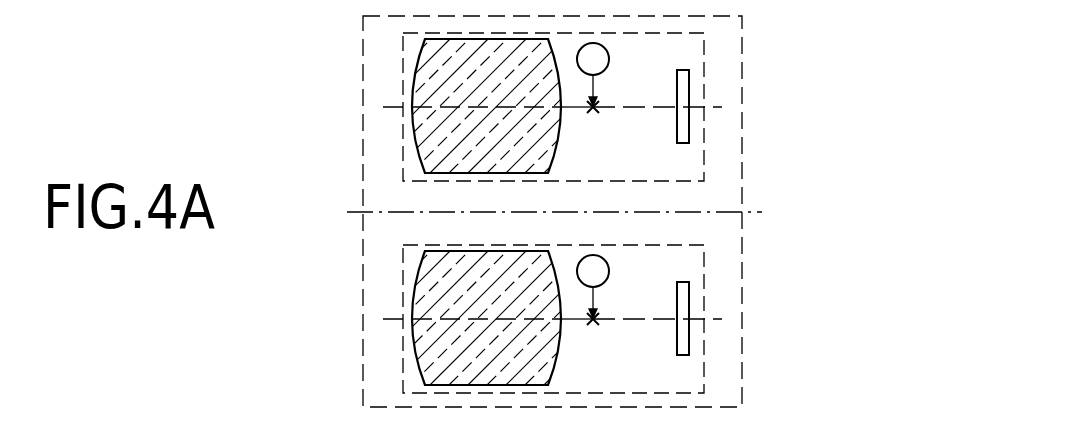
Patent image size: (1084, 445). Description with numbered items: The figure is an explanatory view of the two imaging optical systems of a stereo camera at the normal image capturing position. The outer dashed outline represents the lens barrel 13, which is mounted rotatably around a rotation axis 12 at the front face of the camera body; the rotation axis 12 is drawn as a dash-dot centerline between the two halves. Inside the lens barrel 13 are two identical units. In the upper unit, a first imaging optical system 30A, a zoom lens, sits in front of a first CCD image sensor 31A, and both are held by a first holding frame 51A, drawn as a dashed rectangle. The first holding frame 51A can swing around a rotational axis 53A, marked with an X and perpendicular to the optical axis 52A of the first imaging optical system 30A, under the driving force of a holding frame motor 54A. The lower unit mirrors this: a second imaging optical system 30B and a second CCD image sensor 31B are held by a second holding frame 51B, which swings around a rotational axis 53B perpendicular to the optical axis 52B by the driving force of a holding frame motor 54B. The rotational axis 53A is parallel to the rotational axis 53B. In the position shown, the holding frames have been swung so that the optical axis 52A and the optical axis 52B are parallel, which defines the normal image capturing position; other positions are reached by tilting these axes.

The rotation axis 12 is at (730, 213).
The lens barrel 13 is at (742, 186).
The first imaging optical system 30A is at (420, 74).
The second imaging optical system 30B is at (487, 318).
The first CCD image sensor 31A is at (677, 143).
The second CCD image sensor 31B is at (662, 332).
The first holding frame 51A is at (704, 82).
The second holding frame 51B is at (607, 319).
The optical axis 52A is at (390, 108).
The optical axis 52B is at (517, 333).
The rotational axis 53A is at (596, 113).
The rotational axis 53B is at (597, 344).
The holding frame motor 54A is at (609, 56).
The holding frame motor 54B is at (623, 286).